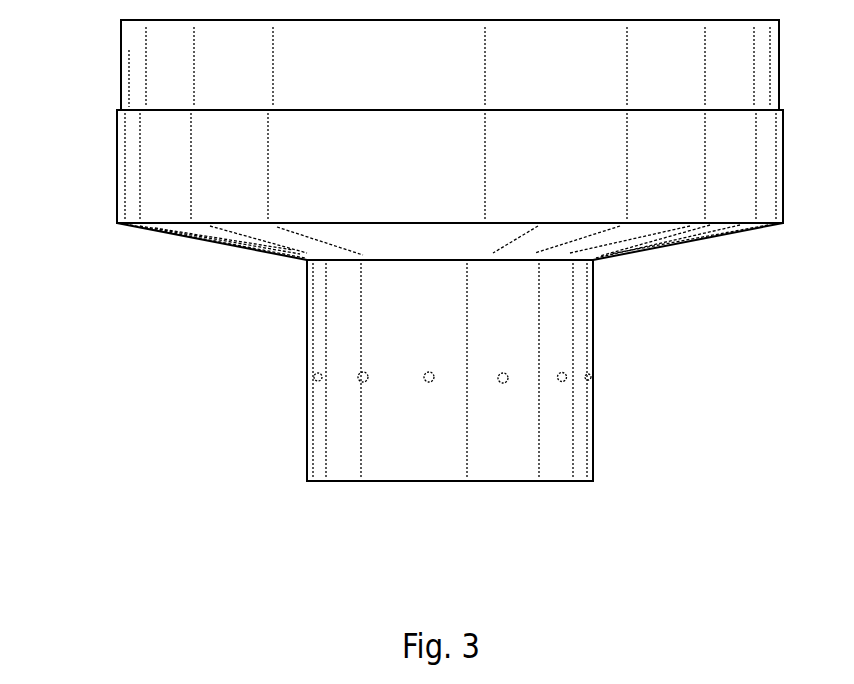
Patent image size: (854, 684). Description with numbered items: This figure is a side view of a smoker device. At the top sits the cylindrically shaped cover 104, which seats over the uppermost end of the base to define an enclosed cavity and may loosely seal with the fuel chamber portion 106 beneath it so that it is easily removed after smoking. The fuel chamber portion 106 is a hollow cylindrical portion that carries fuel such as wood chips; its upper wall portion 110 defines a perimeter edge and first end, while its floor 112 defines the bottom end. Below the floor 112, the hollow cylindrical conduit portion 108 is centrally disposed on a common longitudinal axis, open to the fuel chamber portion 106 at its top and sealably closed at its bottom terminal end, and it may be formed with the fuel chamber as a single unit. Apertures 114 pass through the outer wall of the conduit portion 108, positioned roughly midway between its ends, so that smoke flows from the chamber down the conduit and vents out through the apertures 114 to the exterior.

The cover 104 is at (779, 52).
The fuel chamber portion 106 is at (778, 186).
The conduit portion 108 is at (593, 332).
The upper wall portion 110 is at (120, 203).
The floor 112 is at (667, 243).
The apertures 114 is at (425, 382).